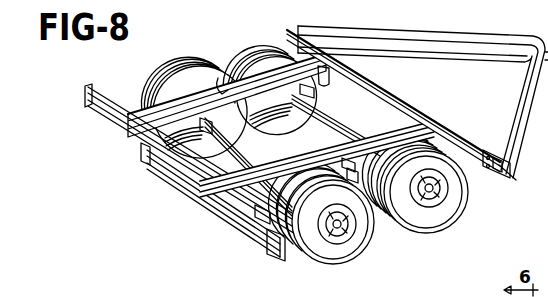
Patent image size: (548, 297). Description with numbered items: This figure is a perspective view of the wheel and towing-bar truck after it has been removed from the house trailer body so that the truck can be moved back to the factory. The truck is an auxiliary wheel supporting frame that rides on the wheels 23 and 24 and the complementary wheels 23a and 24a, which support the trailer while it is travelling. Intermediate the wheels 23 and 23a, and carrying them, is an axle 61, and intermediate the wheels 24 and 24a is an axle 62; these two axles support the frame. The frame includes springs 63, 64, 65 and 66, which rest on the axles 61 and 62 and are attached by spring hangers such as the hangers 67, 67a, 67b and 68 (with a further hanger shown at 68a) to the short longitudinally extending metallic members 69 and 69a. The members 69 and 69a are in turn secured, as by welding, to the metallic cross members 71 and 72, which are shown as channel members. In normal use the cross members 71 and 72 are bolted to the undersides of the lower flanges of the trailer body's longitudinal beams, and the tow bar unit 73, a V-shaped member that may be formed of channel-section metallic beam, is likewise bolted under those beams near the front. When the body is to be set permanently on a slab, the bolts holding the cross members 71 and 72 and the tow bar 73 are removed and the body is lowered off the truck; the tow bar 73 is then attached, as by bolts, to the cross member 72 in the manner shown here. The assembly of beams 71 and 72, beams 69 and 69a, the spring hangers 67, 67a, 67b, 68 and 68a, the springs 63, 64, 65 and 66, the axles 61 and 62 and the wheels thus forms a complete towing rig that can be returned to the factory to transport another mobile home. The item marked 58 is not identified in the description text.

The wheel 23 is at (315, 264).
The complementary wheel 23a is at (160, 88).
The wheel 24 is at (450, 202).
The complementary wheel 24a is at (258, 48).
The section line 58 is at (442, 288).
The axle 61 is at (200, 189).
The axle 62 is at (336, 123).
The spring 63 is at (238, 126).
The spring 64 is at (316, 92).
The spring 65 is at (268, 233).
The spring 66 is at (346, 160).
The spring hanger 67 is at (145, 150).
The spring hanger 67a is at (223, 78).
The spring hanger 67b is at (323, 80).
The spring hanger 68 is at (258, 212).
The spring hanger 68a is at (353, 172).
The longitudinally extending metallic member 69 is at (133, 116).
The longitudinally extending metallic member 69a is at (390, 133).
The cross member 71 is at (90, 96).
The cross member 72 is at (378, 84).
The tow bar unit 73 is at (504, 34).